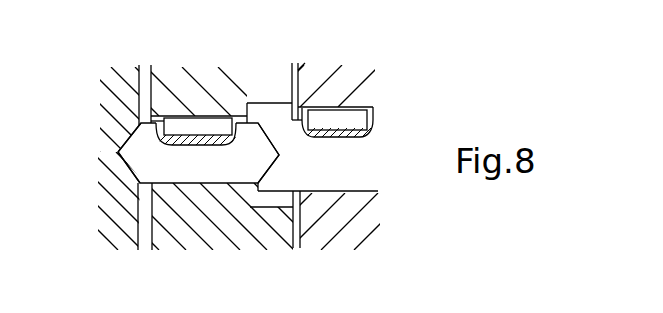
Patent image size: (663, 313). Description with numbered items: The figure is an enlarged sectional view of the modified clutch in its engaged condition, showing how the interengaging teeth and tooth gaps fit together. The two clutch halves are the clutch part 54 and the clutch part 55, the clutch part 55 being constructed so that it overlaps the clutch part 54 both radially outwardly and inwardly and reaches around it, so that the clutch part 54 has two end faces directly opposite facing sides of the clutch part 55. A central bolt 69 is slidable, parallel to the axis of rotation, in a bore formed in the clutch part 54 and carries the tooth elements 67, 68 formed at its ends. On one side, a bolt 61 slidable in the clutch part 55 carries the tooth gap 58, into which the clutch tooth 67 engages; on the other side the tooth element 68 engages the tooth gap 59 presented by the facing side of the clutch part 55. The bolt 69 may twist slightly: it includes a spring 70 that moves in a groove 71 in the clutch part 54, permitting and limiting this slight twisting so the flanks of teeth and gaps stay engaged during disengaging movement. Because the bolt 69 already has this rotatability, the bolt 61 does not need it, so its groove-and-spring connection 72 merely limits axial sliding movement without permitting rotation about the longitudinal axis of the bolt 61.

The clutch part 54 is at (222, 220).
The clutch part 55 is at (118, 96).
The tooth gap 58 is at (267, 148).
The tooth gap 59 is at (118, 151).
The bolt 61 is at (368, 163).
The clutch tooth 67 is at (253, 163).
The tooth element 68 is at (110, 181).
The bolt 69 is at (177, 183).
The spring 70 is at (205, 125).
The groove 71 is at (160, 116).
The groove-and-spring connection 72 is at (338, 122).